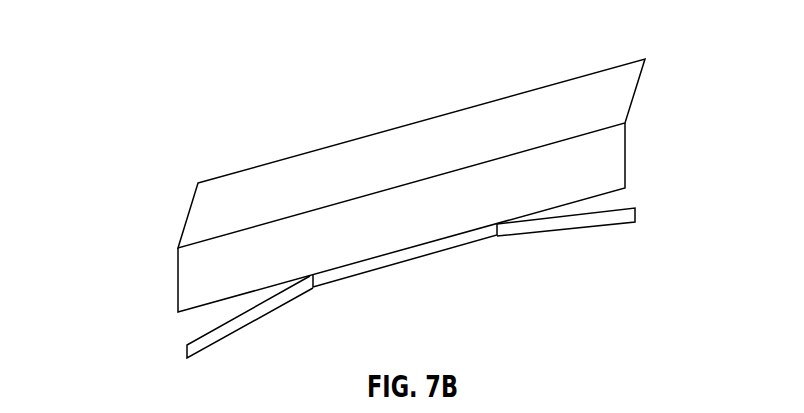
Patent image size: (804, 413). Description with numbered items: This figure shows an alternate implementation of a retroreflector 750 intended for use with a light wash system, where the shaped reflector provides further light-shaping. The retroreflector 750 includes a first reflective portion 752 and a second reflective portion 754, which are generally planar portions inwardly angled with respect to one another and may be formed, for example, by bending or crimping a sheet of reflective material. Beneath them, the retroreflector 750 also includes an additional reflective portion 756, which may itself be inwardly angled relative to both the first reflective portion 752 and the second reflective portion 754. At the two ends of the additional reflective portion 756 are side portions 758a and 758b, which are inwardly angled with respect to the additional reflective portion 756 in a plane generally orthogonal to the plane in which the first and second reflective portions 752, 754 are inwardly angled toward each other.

The retroreflector 750 is at (113, 79).
The first reflective portion 752 is at (285, 175).
The second reflective portion 754 is at (608, 163).
The additional reflective portion 756 is at (405, 252).
The side portion 758a is at (258, 313).
The side portion 758b is at (585, 222).